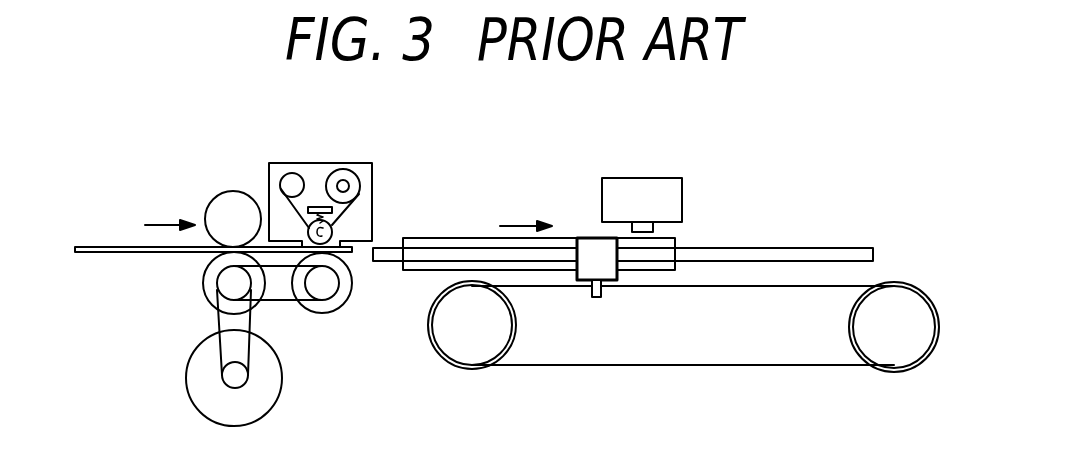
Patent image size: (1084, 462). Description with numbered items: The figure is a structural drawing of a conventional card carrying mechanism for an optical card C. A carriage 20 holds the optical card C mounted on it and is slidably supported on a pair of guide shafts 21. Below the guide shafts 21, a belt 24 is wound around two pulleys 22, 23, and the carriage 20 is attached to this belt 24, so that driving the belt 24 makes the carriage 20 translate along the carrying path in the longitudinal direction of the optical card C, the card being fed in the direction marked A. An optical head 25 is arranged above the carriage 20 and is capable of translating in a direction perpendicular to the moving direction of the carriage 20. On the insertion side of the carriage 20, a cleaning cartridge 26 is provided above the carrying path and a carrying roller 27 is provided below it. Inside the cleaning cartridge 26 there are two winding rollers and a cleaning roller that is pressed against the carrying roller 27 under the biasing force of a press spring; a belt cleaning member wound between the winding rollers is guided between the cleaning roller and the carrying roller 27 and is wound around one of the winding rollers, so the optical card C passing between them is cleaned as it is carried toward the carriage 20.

The carriage 20 is at (437, 237).
The guide shafts 21 is at (783, 248).
The pulley 22 is at (467, 348).
The pulley 23 is at (902, 343).
The belt 24 is at (738, 366).
The optical head 25 is at (654, 182).
The cleaning cartridge 26 is at (326, 163).
The carrying roller 27 is at (332, 307).
The optical card C is at (105, 245).
The feed direction A is at (170, 209).